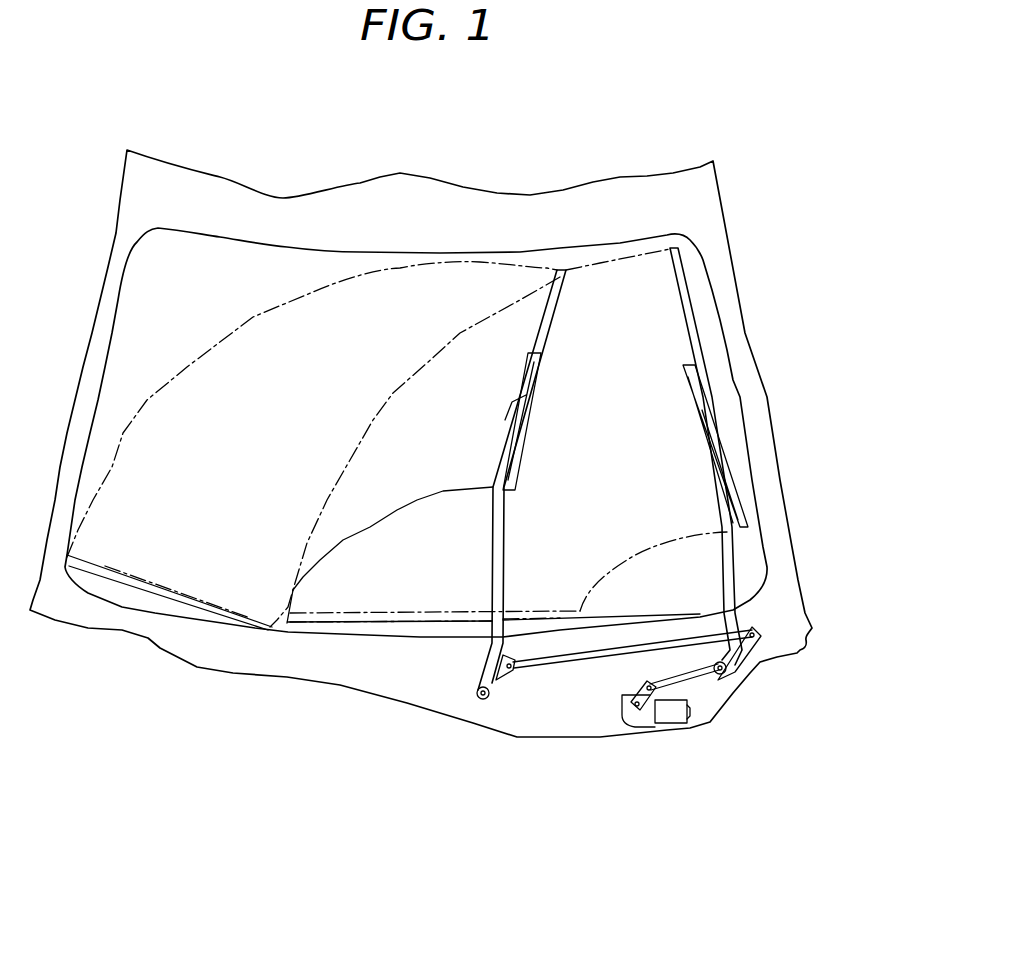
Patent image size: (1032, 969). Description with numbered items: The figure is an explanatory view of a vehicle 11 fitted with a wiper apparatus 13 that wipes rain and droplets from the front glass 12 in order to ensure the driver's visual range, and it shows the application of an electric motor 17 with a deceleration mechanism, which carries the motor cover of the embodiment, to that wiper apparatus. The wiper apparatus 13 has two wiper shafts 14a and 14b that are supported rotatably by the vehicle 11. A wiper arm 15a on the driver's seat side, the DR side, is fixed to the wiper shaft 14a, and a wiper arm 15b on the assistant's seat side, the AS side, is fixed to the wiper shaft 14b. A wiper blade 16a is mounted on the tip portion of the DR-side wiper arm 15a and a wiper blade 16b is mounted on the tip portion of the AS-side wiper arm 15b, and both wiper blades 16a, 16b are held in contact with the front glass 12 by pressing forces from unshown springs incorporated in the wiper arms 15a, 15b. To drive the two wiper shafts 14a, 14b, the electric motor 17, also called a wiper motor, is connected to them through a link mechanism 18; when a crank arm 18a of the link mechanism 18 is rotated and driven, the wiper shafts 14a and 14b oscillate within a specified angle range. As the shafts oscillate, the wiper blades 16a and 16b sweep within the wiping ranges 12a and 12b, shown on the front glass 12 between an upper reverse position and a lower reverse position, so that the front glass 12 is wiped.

The vehicle 11 is at (718, 190).
The front glass 12 is at (215, 260).
The wiping range 12a is at (593, 267).
The wiping range 12b is at (313, 292).
The wiper apparatus 13 is at (607, 725).
The wiper shaft 14a is at (722, 674).
The wiper shaft 14b is at (483, 696).
The wiper arm 15a is at (723, 580).
The wiper arm 15b is at (493, 593).
The wiper blade 16a is at (700, 363).
The wiper blade 16b is at (563, 290).
The electric motor with a deceleration mechanism 17 is at (668, 732).
The link mechanism 18 is at (590, 668).
The crank arm 18a is at (655, 712).